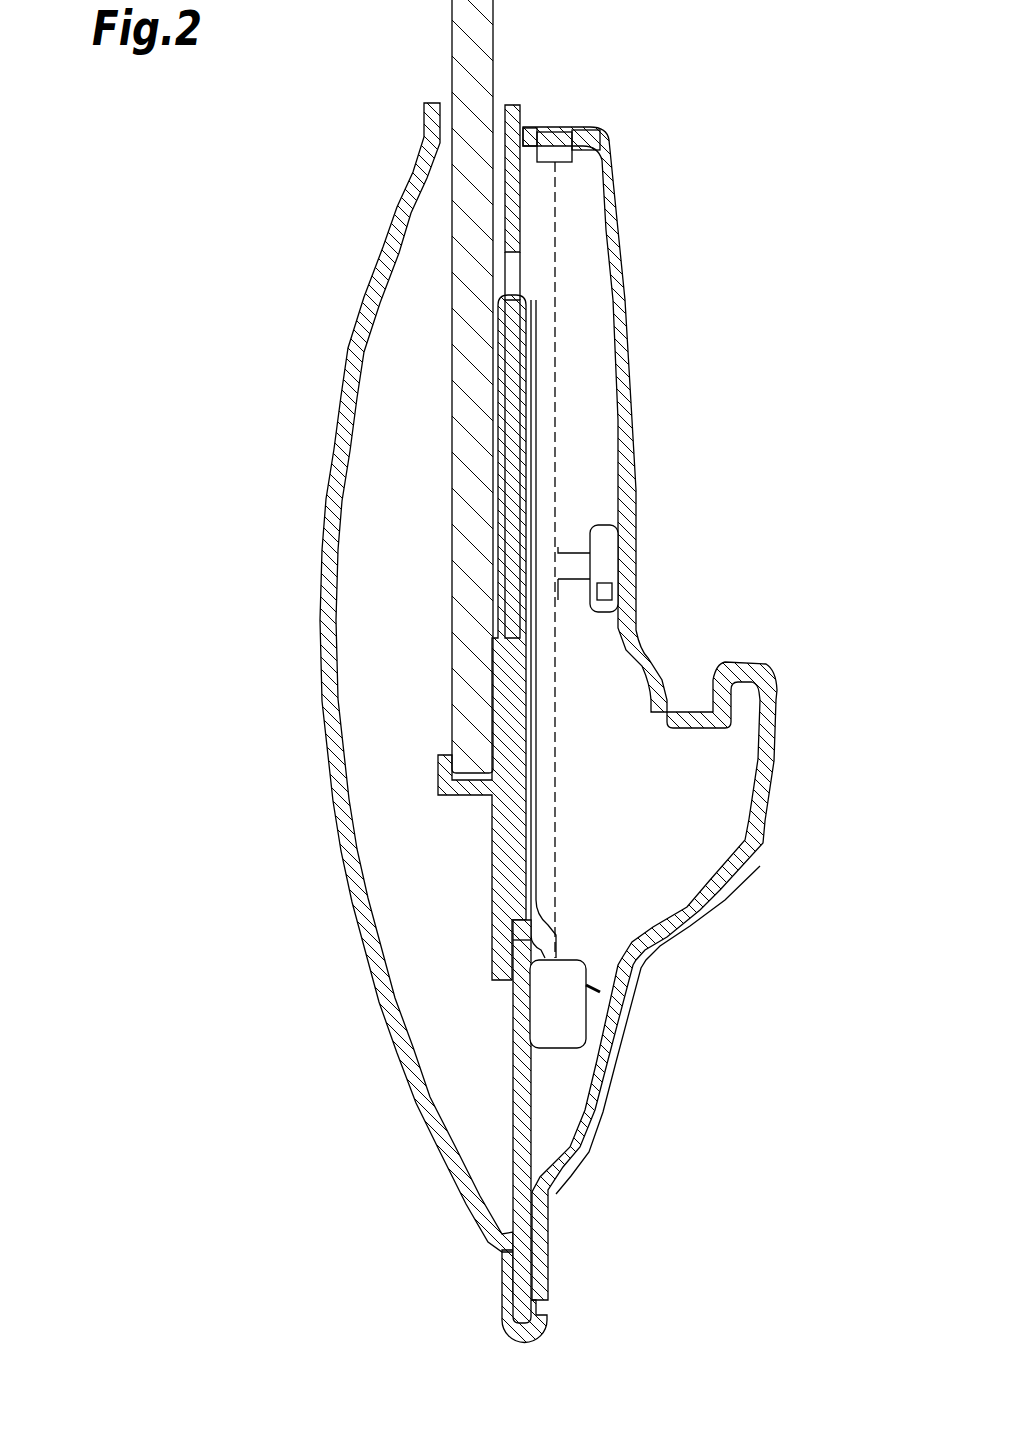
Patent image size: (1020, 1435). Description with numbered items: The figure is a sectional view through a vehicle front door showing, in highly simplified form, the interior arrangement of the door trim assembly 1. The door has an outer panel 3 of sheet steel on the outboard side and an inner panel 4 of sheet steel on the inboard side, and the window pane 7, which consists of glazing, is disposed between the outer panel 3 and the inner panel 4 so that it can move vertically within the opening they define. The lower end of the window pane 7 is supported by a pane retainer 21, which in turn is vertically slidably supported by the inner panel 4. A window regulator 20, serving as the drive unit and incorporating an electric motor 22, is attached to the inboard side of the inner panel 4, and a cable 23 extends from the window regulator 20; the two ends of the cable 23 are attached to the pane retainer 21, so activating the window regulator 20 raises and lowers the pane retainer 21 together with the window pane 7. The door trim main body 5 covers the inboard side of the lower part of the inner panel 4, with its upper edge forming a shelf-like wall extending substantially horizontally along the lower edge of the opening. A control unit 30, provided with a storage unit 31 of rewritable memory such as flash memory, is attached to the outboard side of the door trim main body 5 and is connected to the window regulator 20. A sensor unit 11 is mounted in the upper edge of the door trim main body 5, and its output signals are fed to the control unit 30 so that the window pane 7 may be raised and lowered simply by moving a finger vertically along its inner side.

The door trim assembly 1 is at (638, 268).
The outer panel 3 is at (320, 577).
The inner panel 4 is at (520, 1068).
The door trim main body 5 is at (637, 398).
The window pane 7 is at (452, 22).
The sensor unit 11 is at (565, 106).
The window regulator 20 is at (588, 987).
The pane retainer 21 is at (470, 785).
The electric motor 22 is at (563, 1022).
The cable 23 is at (534, 814).
The control unit 30 is at (605, 547).
The storage unit 31 is at (610, 588).